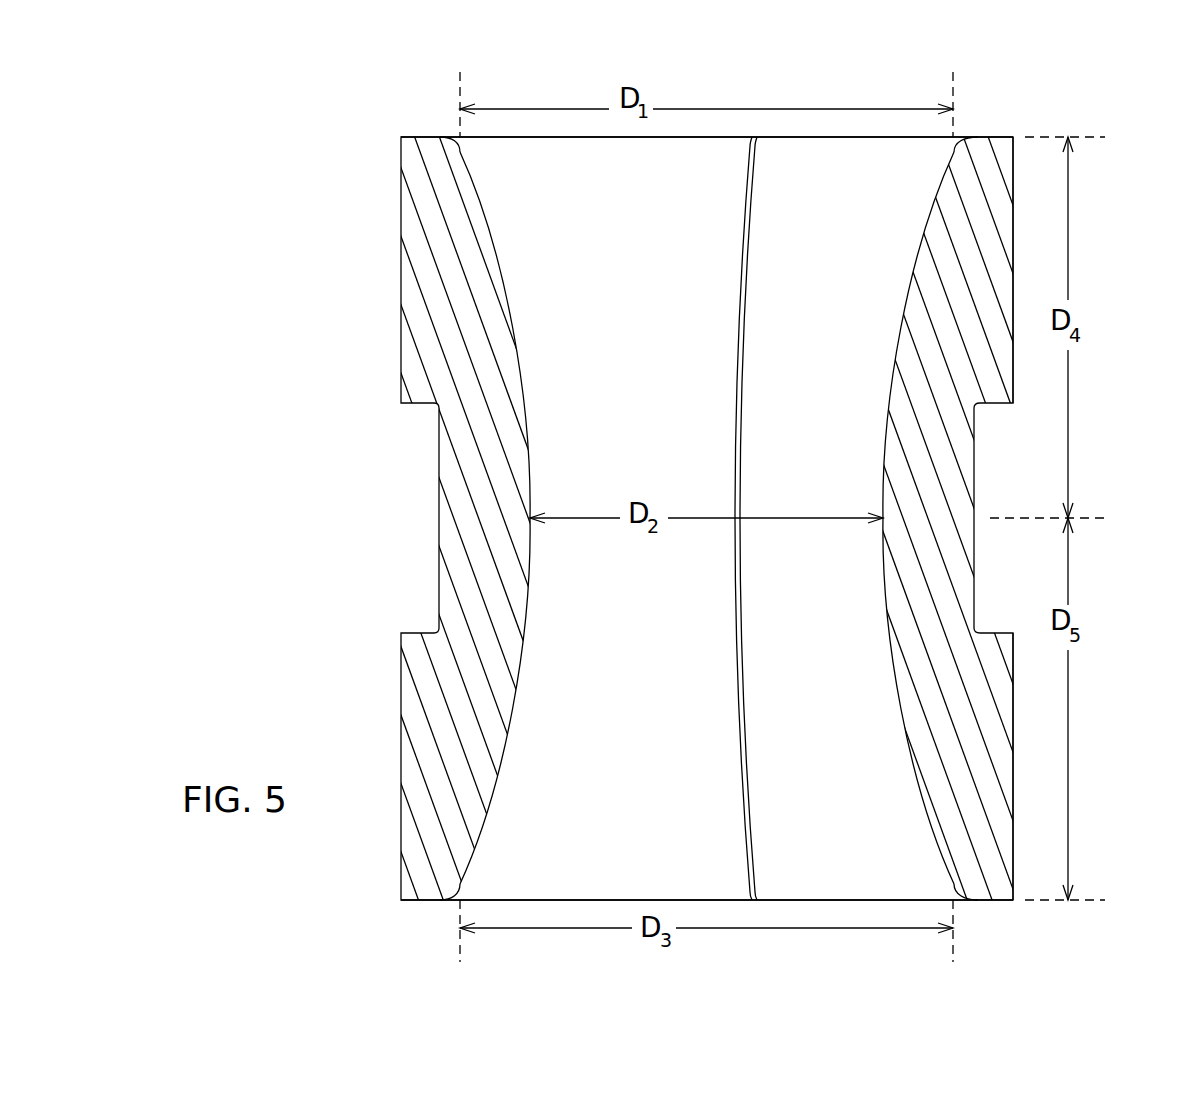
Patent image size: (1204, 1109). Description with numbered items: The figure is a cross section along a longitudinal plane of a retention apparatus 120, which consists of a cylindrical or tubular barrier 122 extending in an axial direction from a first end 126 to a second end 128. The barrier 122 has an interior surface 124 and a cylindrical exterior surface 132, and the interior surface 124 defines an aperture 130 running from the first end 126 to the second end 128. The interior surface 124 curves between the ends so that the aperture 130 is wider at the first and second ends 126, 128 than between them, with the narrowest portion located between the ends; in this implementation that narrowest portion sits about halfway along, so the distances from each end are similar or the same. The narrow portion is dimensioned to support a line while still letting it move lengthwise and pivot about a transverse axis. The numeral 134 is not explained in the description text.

The retention apparatus 120 is at (352, 76).
The barrier 122 is at (478, 483).
The interior surface 124 is at (524, 650).
The first end 126 is at (1003, 137).
The second end 128 is at (410, 901).
The aperture 130 is at (661, 338).
The exterior surface 132 is at (1013, 722).
The rounded edge 134 is at (445, 137).